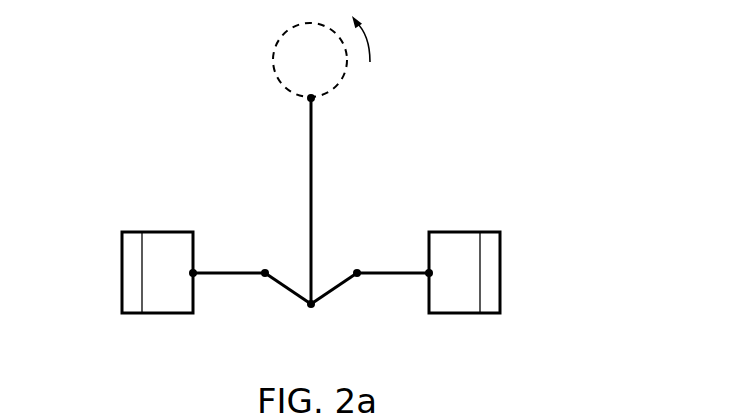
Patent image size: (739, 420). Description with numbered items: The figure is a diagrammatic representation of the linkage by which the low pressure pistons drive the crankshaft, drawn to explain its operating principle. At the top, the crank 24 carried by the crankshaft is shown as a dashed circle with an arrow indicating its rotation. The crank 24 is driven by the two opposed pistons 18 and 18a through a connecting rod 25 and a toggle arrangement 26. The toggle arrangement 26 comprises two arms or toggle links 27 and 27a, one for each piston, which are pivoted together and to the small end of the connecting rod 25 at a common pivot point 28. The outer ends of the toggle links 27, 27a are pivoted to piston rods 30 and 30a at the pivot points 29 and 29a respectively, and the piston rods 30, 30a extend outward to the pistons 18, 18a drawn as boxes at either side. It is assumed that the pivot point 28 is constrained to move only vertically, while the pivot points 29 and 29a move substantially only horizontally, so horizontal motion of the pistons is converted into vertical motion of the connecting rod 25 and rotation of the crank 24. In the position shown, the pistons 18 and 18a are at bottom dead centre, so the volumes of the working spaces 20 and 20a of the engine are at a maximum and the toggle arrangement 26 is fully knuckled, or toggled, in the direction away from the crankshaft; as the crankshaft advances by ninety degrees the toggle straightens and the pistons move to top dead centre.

The piston 18 is at (170, 246).
The working space 20 is at (130, 262).
The piston 18a is at (447, 240).
The working space 20a is at (490, 262).
The crank 24 is at (313, 100).
The connecting rod 25 is at (311, 182).
The toggle arrangement 26 is at (276, 312).
The toggle link 27 is at (288, 287).
The toggle link 27a is at (333, 293).
The pivot point 28 is at (313, 307).
The pivot point 29 is at (262, 278).
The pivot point 29a is at (360, 277).
The piston rod 30 is at (232, 270).
The piston rod 30a is at (388, 270).